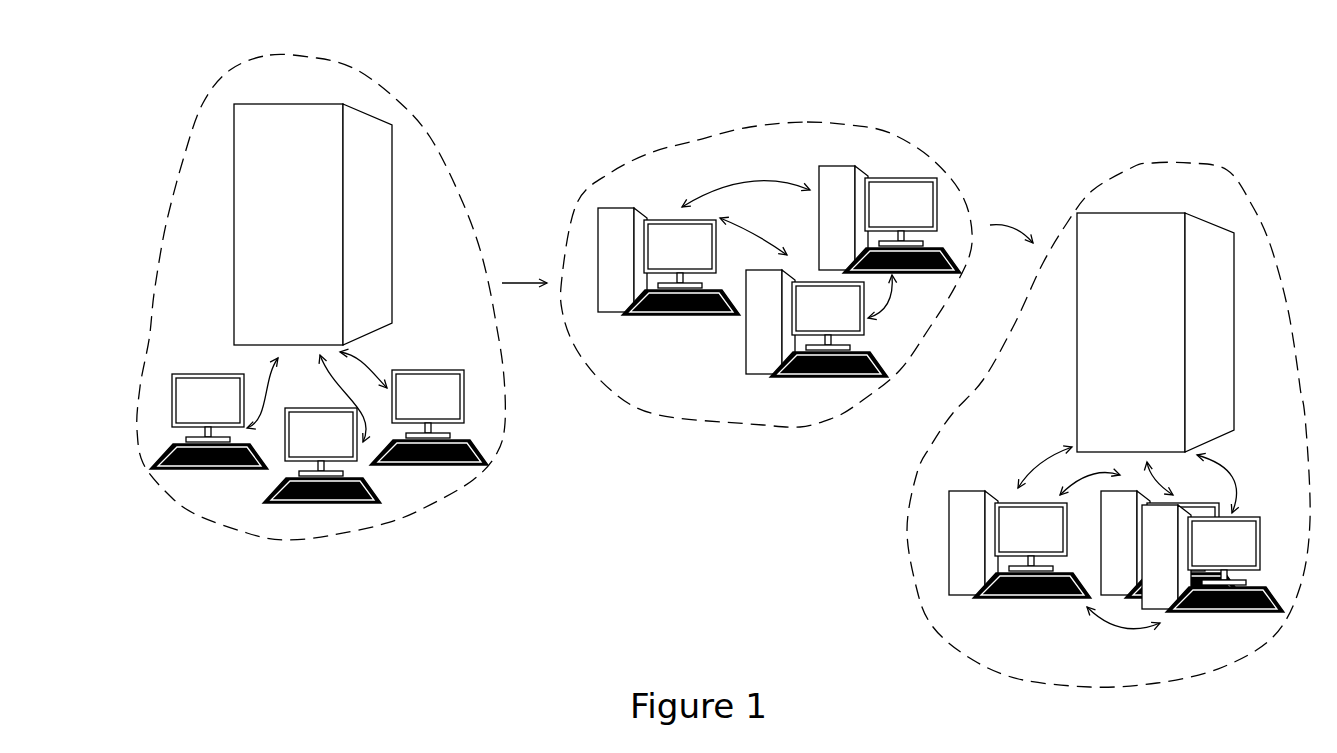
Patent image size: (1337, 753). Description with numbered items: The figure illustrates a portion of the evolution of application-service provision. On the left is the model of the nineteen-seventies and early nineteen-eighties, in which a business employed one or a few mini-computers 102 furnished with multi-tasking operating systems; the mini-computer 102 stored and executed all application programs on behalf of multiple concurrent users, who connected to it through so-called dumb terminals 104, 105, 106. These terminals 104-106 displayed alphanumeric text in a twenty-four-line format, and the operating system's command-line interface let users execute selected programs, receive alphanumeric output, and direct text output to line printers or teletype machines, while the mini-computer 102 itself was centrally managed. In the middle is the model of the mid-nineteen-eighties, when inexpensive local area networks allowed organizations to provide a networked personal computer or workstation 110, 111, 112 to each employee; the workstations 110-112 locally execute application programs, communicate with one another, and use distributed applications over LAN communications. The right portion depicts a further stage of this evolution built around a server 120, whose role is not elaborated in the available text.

The mini-computer 102 is at (275, 105).
The dumb terminal 104 is at (207, 470).
The dumb terminal 105 is at (285, 497).
The dumb terminal 106 is at (448, 468).
The networked personal computer or workstation 110 is at (675, 315).
The networked personal computer or workstation 111 is at (903, 180).
The networked personal computer or workstation 112 is at (795, 377).
The server 120 is at (1149, 212).